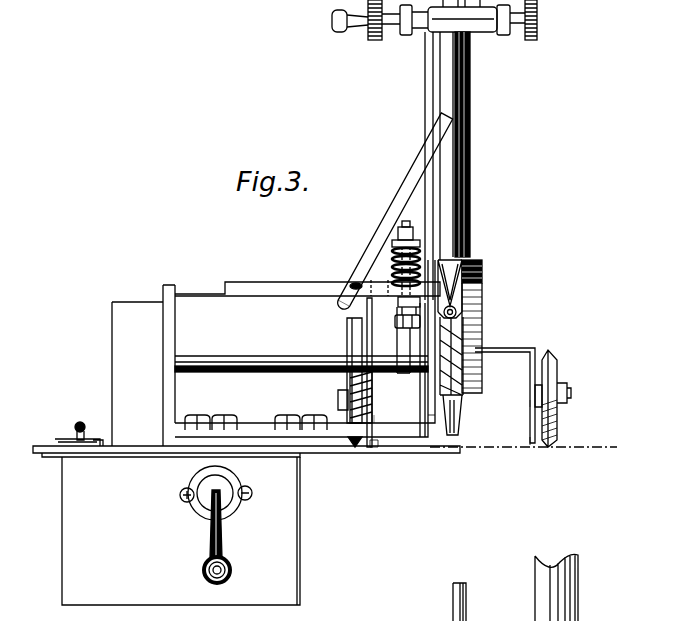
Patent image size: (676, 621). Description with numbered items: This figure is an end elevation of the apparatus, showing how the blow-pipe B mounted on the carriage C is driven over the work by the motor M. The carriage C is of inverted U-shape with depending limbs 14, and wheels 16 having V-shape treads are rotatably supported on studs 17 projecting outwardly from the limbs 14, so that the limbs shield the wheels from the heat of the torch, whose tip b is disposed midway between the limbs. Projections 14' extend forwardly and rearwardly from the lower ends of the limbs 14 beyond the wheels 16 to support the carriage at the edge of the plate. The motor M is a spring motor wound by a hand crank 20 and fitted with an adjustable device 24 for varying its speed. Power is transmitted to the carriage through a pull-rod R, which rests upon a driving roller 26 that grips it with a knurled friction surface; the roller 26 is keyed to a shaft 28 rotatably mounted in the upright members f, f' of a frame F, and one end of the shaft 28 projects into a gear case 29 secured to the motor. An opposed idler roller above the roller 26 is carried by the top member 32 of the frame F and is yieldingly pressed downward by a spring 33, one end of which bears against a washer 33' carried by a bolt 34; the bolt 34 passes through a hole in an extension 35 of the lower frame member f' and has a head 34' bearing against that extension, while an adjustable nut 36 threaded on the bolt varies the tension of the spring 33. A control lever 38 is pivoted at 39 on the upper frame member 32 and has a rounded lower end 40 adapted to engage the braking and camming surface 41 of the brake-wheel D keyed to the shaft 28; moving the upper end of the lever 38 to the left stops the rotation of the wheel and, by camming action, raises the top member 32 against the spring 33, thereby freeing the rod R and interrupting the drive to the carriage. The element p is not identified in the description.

The blow-pipe B is at (474, 143).
The lever 38 is at (413, 183).
The pivot 39 is at (350, 285).
The rounded lower end 40 is at (344, 310).
The top member 32 is at (300, 282).
The adjustable nut 36 is at (398, 232).
The washer 33' is at (376, 241).
The spring 33 is at (371, 272).
The bolt 34 is at (396, 303).
The extension 35 is at (396, 326).
The head 34' is at (408, 370).
The pulley p is at (478, 264).
The pull-rod R is at (480, 313).
The driving roller 26 is at (463, 383).
The tip b is at (458, 427).
The frame F is at (410, 432).
The upright member f is at (180, 365).
The lower frame member f' is at (417, 407).
The gear case 29 is at (112, 375).
The shaft 28 is at (245, 360).
The brake-wheel D is at (347, 345).
The braking and camming surface 41 is at (348, 381).
The depending limbs 14 is at (452, 410).
The carriage C is at (528, 347).
The wheels 16 is at (559, 441).
The studs 17 is at (571, 393).
The projections 14' is at (450, 456).
The motor M is at (62, 497).
The adjustable device 24 is at (76, 426).
The hand crank 20 is at (222, 525).